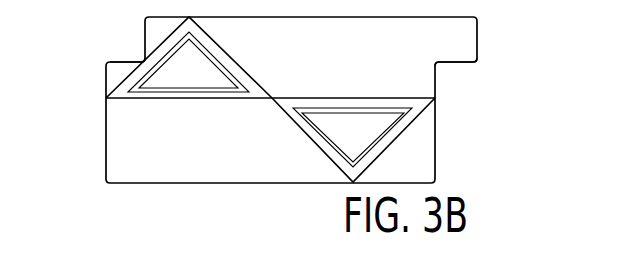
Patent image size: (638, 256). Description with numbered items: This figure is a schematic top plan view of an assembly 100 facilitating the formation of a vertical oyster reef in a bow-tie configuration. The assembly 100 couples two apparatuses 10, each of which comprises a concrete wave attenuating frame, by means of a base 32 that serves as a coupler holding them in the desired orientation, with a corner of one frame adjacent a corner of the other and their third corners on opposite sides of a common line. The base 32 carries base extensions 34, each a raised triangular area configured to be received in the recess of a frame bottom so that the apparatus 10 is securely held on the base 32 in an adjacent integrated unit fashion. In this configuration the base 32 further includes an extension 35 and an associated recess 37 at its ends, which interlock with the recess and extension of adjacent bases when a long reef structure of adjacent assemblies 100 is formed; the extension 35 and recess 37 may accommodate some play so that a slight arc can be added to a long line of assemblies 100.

The assembly 100 is at (82, 140).
The base 32 is at (199, 162).
The recess 37 is at (133, 43).
The extension 35 is at (452, 42).
The apparatus 10 is at (193, 20).
The base extension 34 is at (173, 89).